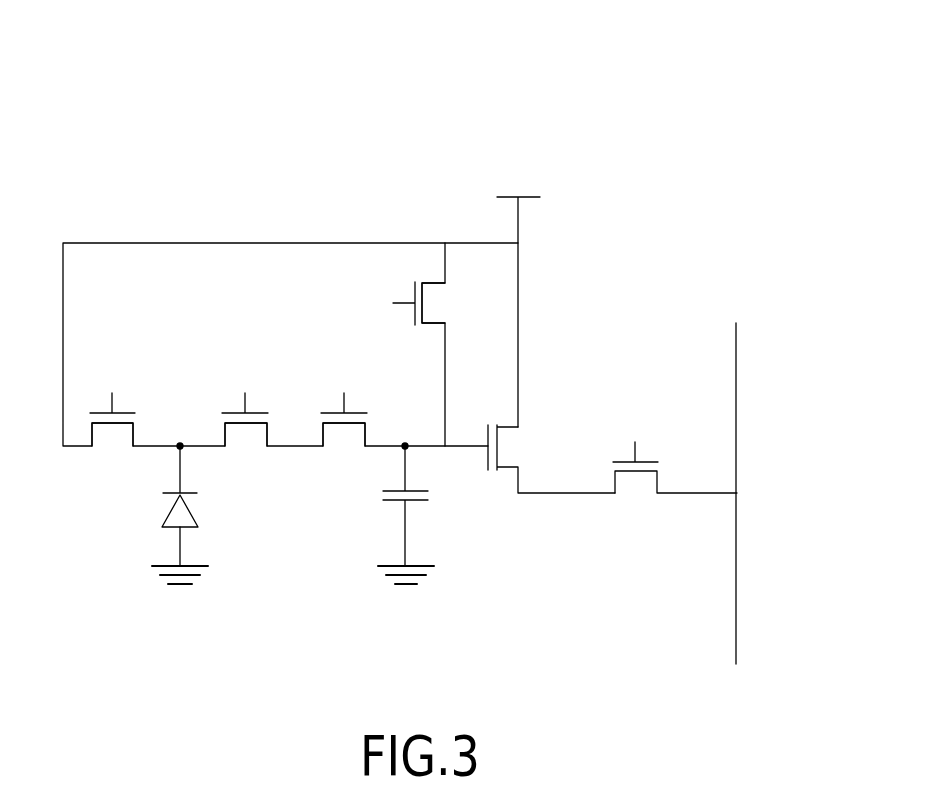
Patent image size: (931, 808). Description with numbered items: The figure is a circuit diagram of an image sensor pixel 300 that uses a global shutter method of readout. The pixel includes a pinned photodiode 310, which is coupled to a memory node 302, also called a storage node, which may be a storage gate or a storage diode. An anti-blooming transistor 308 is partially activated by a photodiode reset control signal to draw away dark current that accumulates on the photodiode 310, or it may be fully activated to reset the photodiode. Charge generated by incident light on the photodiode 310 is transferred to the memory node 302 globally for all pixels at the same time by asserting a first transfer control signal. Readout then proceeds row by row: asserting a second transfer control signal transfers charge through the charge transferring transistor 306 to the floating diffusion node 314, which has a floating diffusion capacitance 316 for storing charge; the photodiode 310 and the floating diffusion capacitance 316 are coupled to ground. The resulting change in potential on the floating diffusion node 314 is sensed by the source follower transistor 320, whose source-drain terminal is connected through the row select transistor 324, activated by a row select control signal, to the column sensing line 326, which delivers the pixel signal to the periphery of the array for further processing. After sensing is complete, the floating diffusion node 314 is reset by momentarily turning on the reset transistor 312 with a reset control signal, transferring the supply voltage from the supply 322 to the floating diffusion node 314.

The image sensor pixel 300 is at (683, 86).
The memory node 302 is at (268, 437).
The charge transferring transistor 306 is at (367, 436).
The anti-blooming transistor 308 is at (135, 436).
The pinned photodiode 310 is at (194, 514).
The reset transistor 312 is at (432, 283).
The floating diffusion node 314 is at (405, 447).
The floating diffusion capacitance 316 is at (418, 500).
The source follower transistor 320 is at (505, 470).
The supply 322 is at (540, 198).
The row select transistor 324 is at (615, 480).
The column sensing line 326 is at (737, 372).